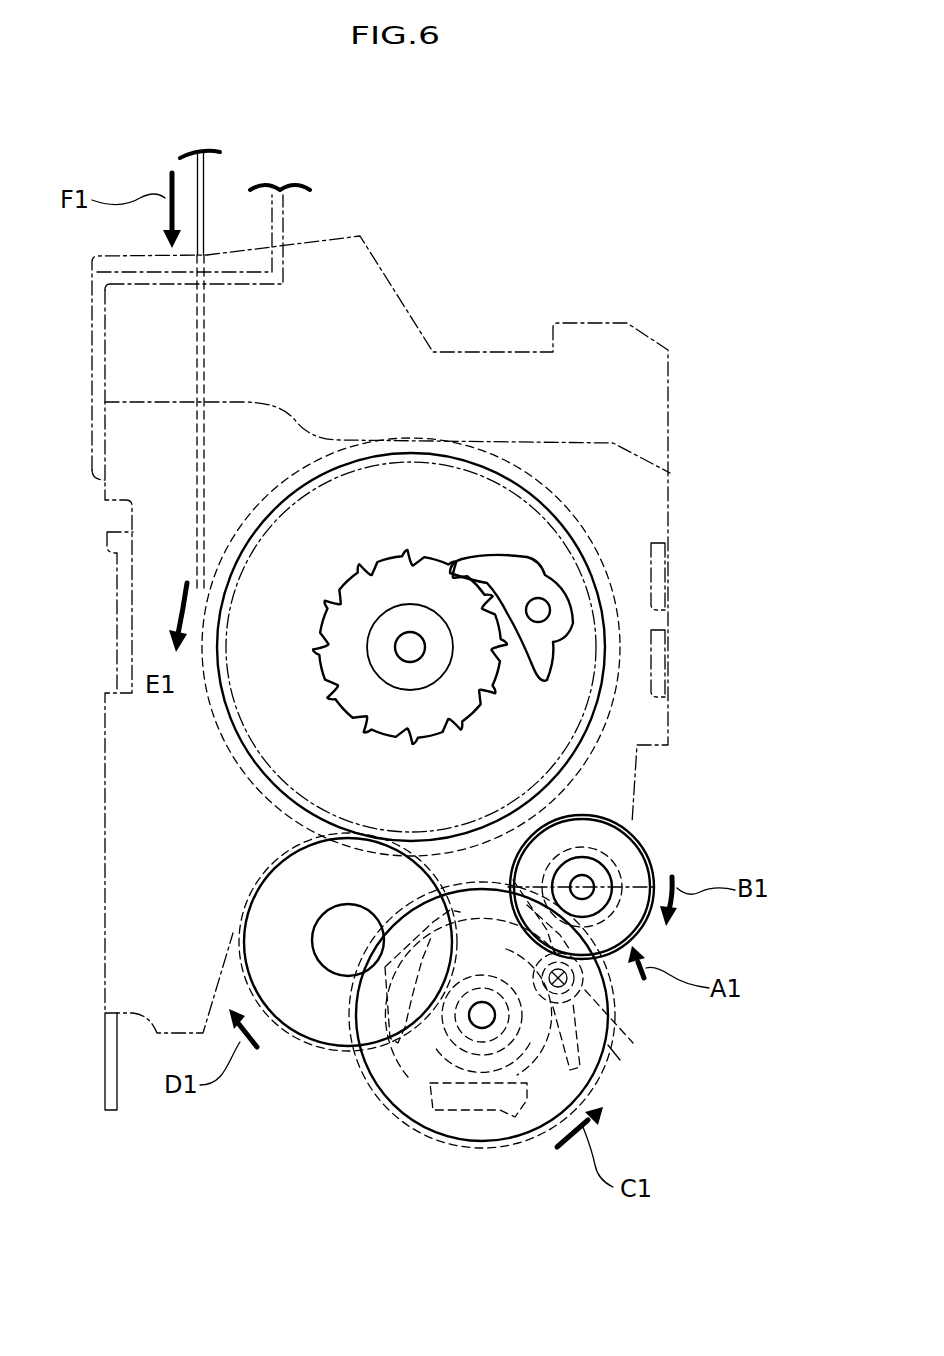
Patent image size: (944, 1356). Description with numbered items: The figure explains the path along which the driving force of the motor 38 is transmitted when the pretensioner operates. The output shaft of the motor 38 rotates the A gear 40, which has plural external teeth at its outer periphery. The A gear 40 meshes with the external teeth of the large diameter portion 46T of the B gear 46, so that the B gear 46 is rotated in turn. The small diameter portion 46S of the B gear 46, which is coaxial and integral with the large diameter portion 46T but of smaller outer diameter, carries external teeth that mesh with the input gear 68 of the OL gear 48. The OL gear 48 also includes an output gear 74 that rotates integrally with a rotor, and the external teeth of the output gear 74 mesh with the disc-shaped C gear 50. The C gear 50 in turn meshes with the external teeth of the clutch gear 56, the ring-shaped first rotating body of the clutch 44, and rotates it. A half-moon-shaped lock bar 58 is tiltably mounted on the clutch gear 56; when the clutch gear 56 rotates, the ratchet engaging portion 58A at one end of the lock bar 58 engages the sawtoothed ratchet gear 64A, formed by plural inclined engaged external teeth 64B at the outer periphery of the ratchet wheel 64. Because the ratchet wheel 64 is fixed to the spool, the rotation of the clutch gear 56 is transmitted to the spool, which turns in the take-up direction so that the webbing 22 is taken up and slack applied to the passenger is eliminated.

The webbing 22 is at (207, 187).
The motor 38 is at (620, 1060).
The A gear 40 is at (633, 1043).
The clutch 44 is at (592, 515).
The B gear 46 is at (582, 816).
The large diameter portion 46T is at (610, 857).
The small diameter portion 46S is at (622, 832).
The OL gear 48 is at (422, 1173).
The C gear 50 is at (254, 868).
The clutch gear 56 is at (363, 453).
The lock bar 58 is at (570, 585).
The ratchet engaging portion 58A is at (490, 558).
The ratchet wheel 64 is at (392, 553).
The ratchet gear 64A is at (425, 557).
The engaged external teeth 64B is at (443, 568).
The input gear 68 is at (597, 1087).
The output gear 74 is at (418, 1050).